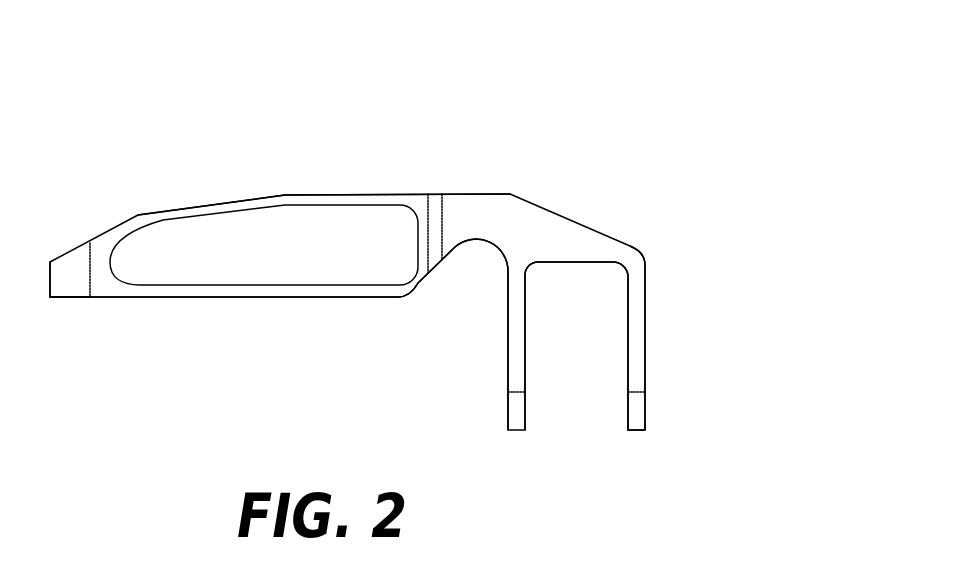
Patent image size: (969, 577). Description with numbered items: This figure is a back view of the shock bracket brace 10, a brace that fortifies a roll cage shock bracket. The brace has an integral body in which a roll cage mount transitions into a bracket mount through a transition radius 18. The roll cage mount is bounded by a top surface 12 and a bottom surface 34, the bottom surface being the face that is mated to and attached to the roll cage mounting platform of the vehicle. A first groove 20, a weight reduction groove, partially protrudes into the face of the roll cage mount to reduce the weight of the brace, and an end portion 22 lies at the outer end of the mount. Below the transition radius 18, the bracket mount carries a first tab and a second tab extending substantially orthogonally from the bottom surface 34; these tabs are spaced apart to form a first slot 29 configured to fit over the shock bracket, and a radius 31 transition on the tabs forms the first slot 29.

The shock bracket brace 10 is at (501, 181).
The top surface 12 is at (353, 193).
The transition radius 18 is at (487, 242).
The first groove 20 is at (235, 253).
The end portion 22 is at (63, 280).
The first slot 29 is at (585, 263).
The radius 31 is at (625, 266).
The bottom surface 34 is at (147, 297).